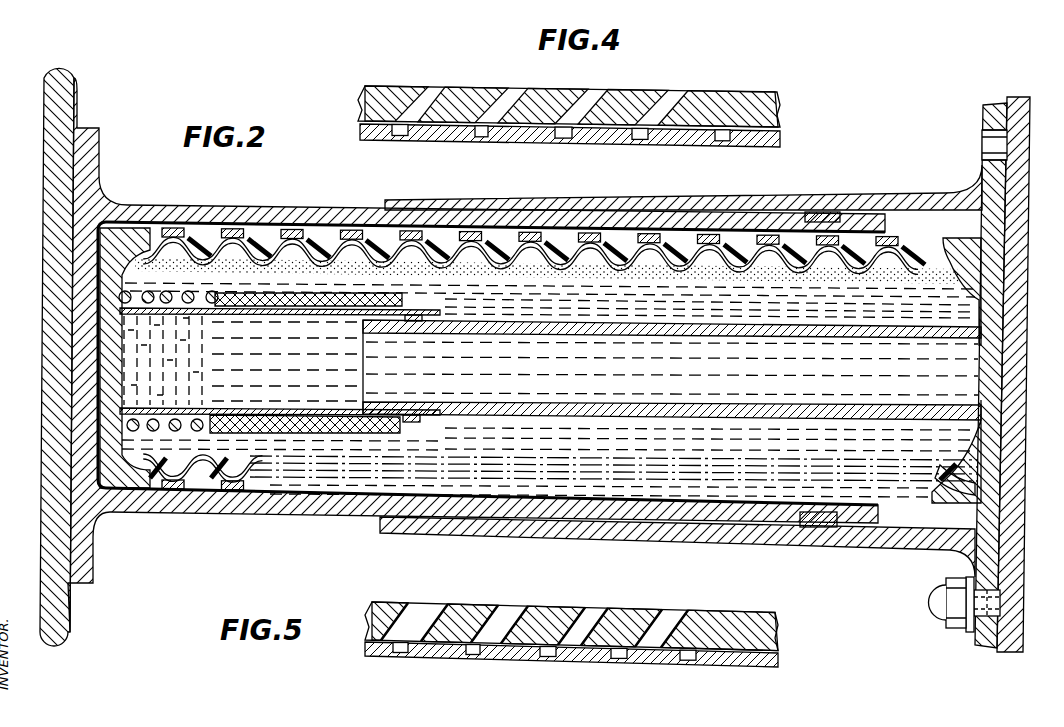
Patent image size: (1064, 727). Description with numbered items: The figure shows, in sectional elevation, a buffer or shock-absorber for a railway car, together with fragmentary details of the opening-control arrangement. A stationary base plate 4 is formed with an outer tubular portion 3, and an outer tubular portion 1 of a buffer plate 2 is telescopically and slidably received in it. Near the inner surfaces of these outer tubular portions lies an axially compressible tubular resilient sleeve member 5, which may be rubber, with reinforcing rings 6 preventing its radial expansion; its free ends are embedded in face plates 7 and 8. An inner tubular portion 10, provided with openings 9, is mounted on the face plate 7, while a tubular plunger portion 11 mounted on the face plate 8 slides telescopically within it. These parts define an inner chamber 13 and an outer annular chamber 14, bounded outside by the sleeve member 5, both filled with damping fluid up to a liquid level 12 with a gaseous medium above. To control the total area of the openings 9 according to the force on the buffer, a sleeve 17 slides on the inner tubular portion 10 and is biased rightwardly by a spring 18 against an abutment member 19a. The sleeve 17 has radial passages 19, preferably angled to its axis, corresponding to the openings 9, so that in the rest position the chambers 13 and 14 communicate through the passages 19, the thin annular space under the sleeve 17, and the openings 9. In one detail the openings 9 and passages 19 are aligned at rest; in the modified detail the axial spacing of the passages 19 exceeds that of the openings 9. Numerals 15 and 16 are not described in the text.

In FIG. 2, the outer tubular portion 1 is at (207, 505).
In FIG. 2, the buffer plate 2 is at (58, 607).
In FIG. 2, the outer tubular portion 3 is at (727, 533).
In FIG. 2, the stationary base plate 4 is at (1007, 555).
In FIG. 2, the tubular resilient sleeve member 5 is at (236, 245).
In FIG. 2, the reinforcing rings 6 is at (312, 236).
In FIG. 2, the face plate 7 is at (138, 450).
In FIG. 2, the face plate 8 is at (987, 377).
In FIG. 2, the openings 9 is at (297, 412).
In FIG. 4, the openings 9 is at (565, 135).
In FIG. 5, the openings 9 is at (548, 656).
In FIG. 2, the inner tubular portion 10 is at (243, 410).
In FIG. 4, the inner tubular portion 10 is at (512, 132).
In FIG. 5, the inner tubular portion 10 is at (430, 652).
In FIG. 2, the tubular plunger portion 11 is at (612, 400).
In FIG. 2, the liquid level 12 is at (515, 270).
In FIG. 2, the inner chamber 13 is at (537, 383).
In FIG. 2, the outer annular chamber 14 is at (627, 270).
In FIG. 2, the granular material 15 is at (442, 268).
In FIG. 2, the direction arrow 16 is at (175, 185).
In FIG. 2, the sleeve 17 is at (300, 433).
In FIG. 4, the sleeve 17 is at (555, 103).
In FIG. 5, the sleeve 17 is at (470, 612).
In FIG. 2, the spring 18 is at (166, 290).
In FIG. 2, the radial passages 19 is at (314, 432).
In FIG. 4, the radial passages 19 is at (420, 100).
In FIG. 5, the radial passages 19 is at (420, 612).
In FIG. 2, the abutment member 19a is at (410, 422).